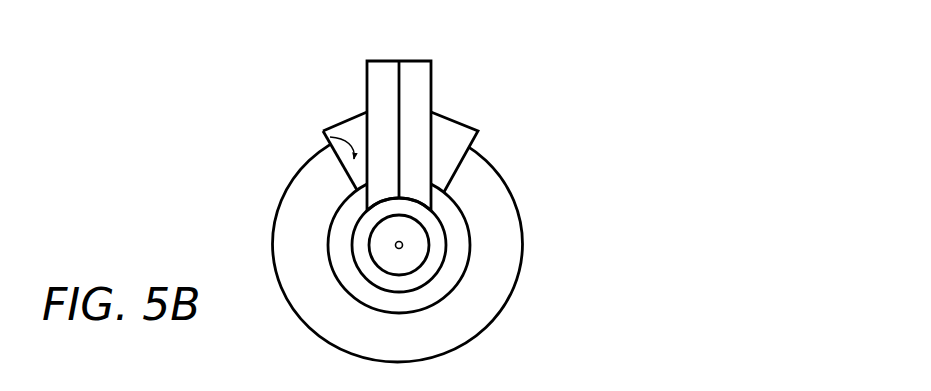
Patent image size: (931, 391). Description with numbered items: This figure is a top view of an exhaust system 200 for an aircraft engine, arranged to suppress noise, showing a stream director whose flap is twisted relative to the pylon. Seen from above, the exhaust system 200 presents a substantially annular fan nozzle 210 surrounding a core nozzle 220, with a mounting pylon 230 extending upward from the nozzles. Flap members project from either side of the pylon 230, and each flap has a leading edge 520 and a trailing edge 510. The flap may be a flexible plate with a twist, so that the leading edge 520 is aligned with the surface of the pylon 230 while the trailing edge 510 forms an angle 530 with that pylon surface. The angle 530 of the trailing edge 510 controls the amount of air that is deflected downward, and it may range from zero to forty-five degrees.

The exhaust system 200 is at (706, 51).
The fan nozzle 210 is at (440, 236).
The core nozzle 220 is at (503, 288).
The mounting pylon 230 is at (412, 77).
The trailing edge 510 is at (333, 163).
The leading edge 520 is at (363, 128).
The angle 530 is at (321, 134).